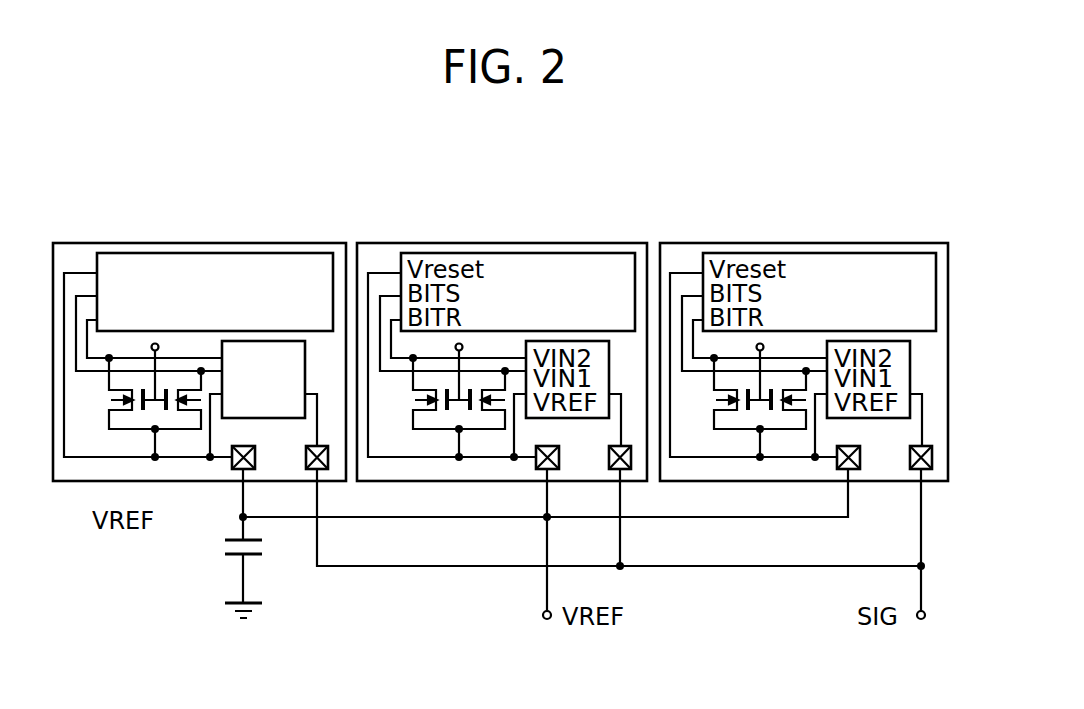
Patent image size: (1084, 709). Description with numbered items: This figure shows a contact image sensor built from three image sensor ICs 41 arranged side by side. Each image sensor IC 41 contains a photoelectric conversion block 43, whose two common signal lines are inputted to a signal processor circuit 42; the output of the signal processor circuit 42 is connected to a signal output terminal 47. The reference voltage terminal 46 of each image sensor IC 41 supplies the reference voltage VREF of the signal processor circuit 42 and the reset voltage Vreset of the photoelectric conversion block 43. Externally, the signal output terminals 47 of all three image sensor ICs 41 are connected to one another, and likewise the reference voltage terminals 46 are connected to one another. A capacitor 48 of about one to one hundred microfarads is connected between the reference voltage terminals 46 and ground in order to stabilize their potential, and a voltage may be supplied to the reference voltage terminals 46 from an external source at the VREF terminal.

The image sensor IC 41 is at (87, 243).
The signal processor circuit 42 is at (292, 341).
The photoelectric conversion block 43 is at (155, 253).
The reference voltage terminal 46 is at (237, 469).
The signal output terminal 47 is at (320, 469).
The capacitor 48 is at (225, 547).